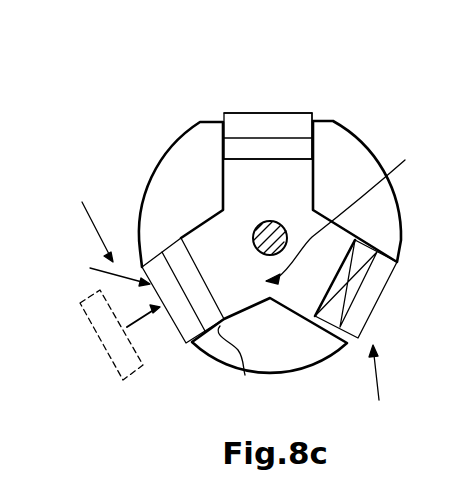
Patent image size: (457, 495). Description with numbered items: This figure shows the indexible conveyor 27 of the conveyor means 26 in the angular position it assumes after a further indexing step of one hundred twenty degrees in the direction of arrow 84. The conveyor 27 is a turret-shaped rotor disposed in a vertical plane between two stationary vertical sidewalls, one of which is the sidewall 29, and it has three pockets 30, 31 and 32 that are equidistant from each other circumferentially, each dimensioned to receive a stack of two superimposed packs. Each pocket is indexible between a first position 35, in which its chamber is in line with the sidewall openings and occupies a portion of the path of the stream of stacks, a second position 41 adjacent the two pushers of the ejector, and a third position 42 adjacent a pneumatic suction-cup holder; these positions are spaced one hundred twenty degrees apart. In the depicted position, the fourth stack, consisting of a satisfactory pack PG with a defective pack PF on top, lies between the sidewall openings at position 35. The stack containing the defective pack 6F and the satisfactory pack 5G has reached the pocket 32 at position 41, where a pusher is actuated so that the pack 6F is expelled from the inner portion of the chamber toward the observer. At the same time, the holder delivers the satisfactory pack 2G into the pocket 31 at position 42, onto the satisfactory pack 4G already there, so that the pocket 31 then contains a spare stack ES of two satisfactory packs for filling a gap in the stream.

The indexible conveyor 27 is at (237, 192).
The stationary vertical sidewall 29 is at (340, 153).
The conveyor means 26 is at (207, 366).
The pocket 32 is at (402, 264).
The pocket 30 is at (229, 136).
The first position 35 is at (312, 110).
The defective pack PF is at (265, 122).
The satisfactory pack PG is at (293, 148).
The arrow 84 is at (347, 215).
The satisfactory pack 4G is at (180, 260).
The satisfactory pack 5G is at (375, 280).
The defective pack 6F is at (333, 308).
The third position 42 is at (87, 223).
The substitute stack ES is at (107, 271).
The second position 41 is at (378, 383).
The satisfactory pack 2G is at (188, 327).
The pocket 31 is at (245, 375).